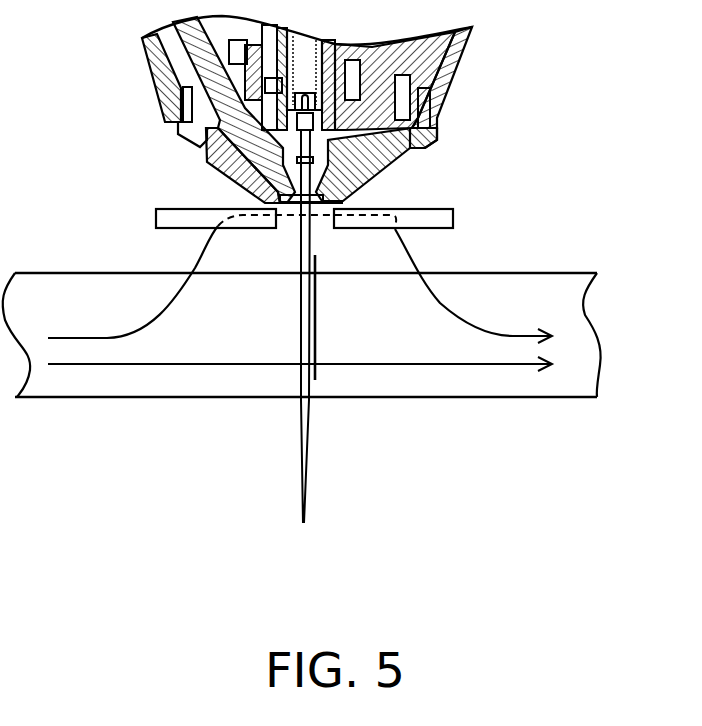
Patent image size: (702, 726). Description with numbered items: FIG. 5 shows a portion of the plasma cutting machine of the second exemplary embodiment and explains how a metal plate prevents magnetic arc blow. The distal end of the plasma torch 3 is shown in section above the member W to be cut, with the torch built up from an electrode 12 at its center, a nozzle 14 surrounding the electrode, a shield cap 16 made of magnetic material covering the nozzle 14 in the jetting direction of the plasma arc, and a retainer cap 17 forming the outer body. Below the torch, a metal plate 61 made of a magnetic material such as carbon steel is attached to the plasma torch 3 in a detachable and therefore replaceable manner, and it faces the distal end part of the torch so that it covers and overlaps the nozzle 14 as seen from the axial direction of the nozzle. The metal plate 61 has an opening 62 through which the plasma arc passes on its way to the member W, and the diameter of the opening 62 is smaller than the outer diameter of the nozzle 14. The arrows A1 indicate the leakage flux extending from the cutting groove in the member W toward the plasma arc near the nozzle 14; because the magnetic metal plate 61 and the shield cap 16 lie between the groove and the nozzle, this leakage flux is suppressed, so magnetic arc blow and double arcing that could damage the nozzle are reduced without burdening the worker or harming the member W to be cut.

The plasma torch 3 is at (490, 49).
The electrode 12 is at (335, 107).
The nozzle 14 is at (345, 163).
The shield cap 16 is at (213, 176).
The retainer cap 17 is at (148, 55).
The metal plate 61 is at (156, 222).
The opening 62 is at (278, 226).
The member to be cut W is at (43, 297).
The leakage flux A1 is at (200, 250).